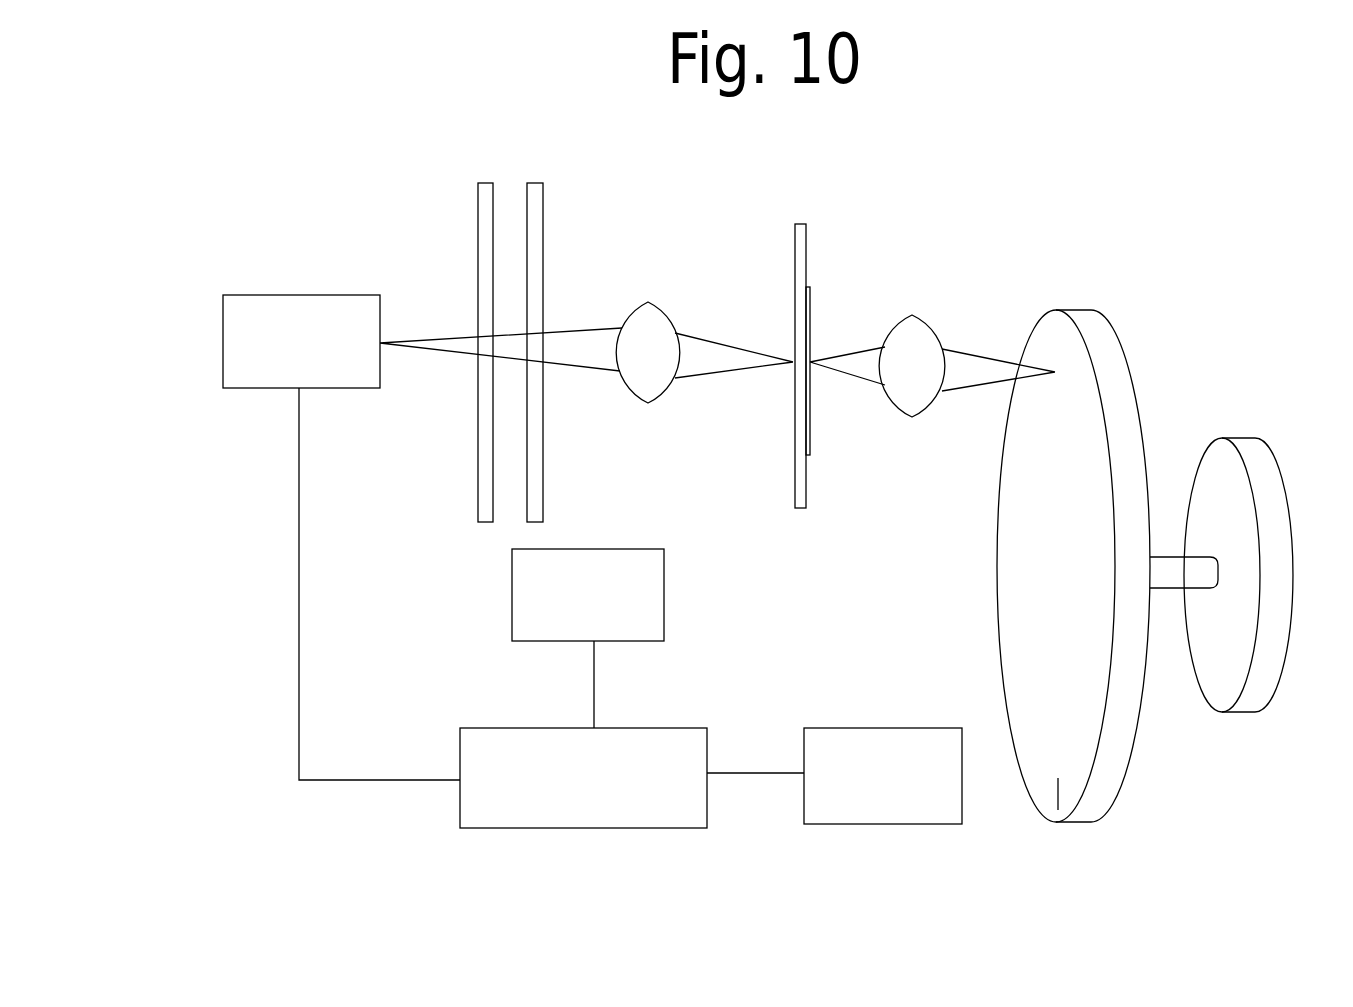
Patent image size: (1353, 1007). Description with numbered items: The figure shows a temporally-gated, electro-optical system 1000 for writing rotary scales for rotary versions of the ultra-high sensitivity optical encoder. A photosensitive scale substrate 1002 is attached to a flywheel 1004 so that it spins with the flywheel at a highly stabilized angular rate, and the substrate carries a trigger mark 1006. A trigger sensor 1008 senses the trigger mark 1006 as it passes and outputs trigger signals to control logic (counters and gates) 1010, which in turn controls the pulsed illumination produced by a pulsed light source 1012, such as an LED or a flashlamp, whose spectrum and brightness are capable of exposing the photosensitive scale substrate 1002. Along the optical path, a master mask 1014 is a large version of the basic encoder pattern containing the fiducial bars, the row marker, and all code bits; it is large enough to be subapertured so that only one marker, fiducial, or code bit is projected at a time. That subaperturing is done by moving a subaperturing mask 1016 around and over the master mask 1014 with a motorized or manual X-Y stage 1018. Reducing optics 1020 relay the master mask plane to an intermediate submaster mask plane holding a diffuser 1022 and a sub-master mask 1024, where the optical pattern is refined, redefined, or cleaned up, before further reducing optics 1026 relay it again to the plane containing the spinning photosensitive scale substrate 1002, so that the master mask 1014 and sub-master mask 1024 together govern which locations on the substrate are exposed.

The system 1000 is at (1075, 215).
The photosensitive scale substrate 1002 is at (1125, 348).
The flywheel 1004 is at (1273, 455).
The trigger mark 1006 is at (1057, 797).
The trigger sensor 1008 is at (882, 824).
The control logic (counters and gates) 1010 is at (573, 828).
The pulsed light source 1012 is at (325, 302).
The master mask 1014 is at (477, 240).
The subaperturing mask 1016 is at (543, 212).
The X-Y stage 1018 is at (512, 590).
The reducing optics 1020 is at (638, 393).
The diffuser 1022 is at (793, 250).
The sub-master mask 1024 is at (810, 308).
The further reducing optics 1026 is at (893, 400).